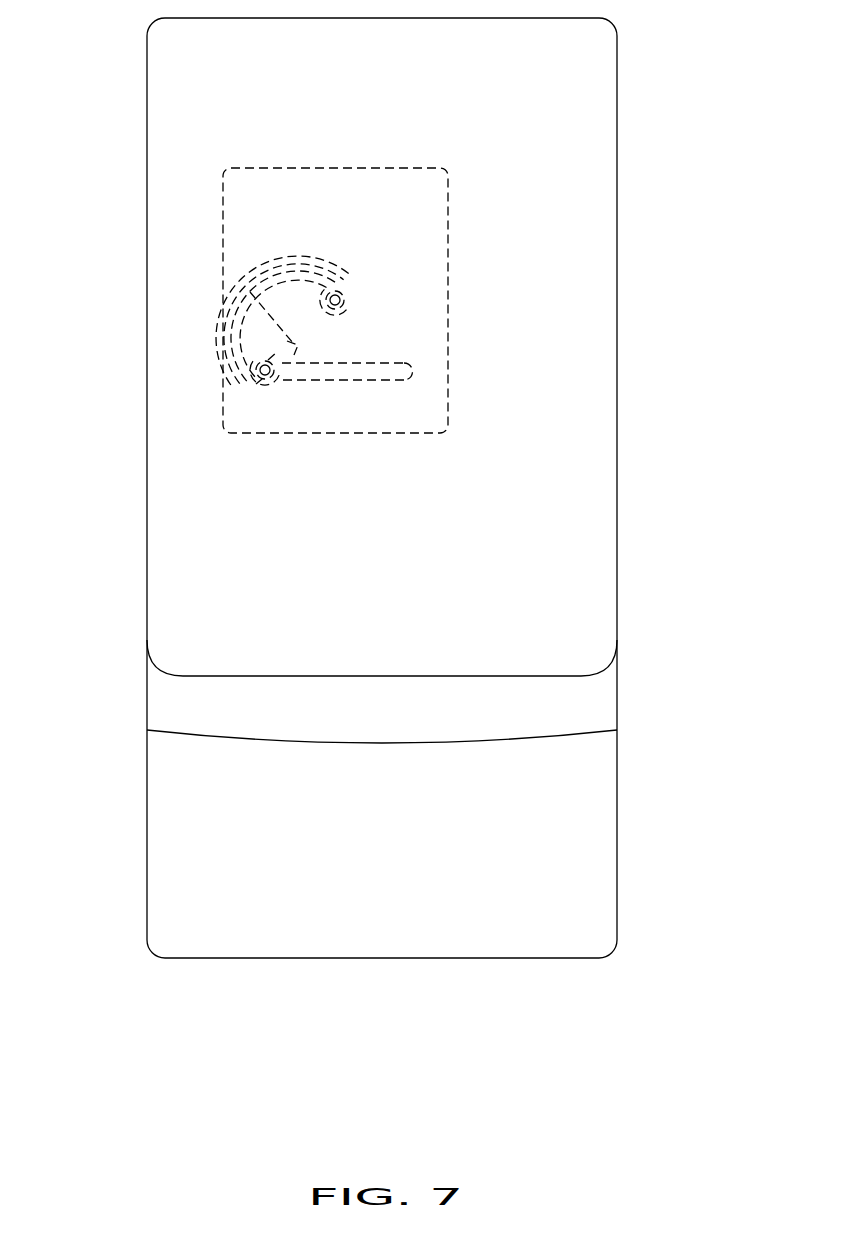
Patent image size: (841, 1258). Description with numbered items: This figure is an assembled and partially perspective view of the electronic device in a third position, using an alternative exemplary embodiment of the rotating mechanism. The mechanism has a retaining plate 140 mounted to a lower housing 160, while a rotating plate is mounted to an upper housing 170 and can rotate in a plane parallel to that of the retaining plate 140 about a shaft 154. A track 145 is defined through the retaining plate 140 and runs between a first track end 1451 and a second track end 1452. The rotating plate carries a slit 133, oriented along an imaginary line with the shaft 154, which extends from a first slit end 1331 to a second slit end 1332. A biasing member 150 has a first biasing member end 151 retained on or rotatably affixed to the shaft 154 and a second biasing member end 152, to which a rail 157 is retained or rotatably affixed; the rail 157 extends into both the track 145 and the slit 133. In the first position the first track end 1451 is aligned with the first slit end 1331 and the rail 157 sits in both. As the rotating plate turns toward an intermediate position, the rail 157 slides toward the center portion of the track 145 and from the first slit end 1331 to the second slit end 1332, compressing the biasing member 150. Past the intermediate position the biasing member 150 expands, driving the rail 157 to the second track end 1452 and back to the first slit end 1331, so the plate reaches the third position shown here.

The biasing member 150 is at (250, 268).
The first biasing member end 151 is at (355, 293).
The shaft 154 is at (357, 307).
The retaining plate 140 is at (448, 403).
The second track end 1452 is at (402, 378).
The track 145 is at (332, 372).
The first track end 1451 is at (252, 380).
The second biasing member end 152 is at (248, 392).
The rail 157 is at (250, 366).
The first slit end 1331 is at (258, 386).
The slit 133 is at (240, 320).
The second slit end 1332 is at (250, 292).
The upper housing 170 is at (552, 541).
The lower housing 160 is at (547, 809).